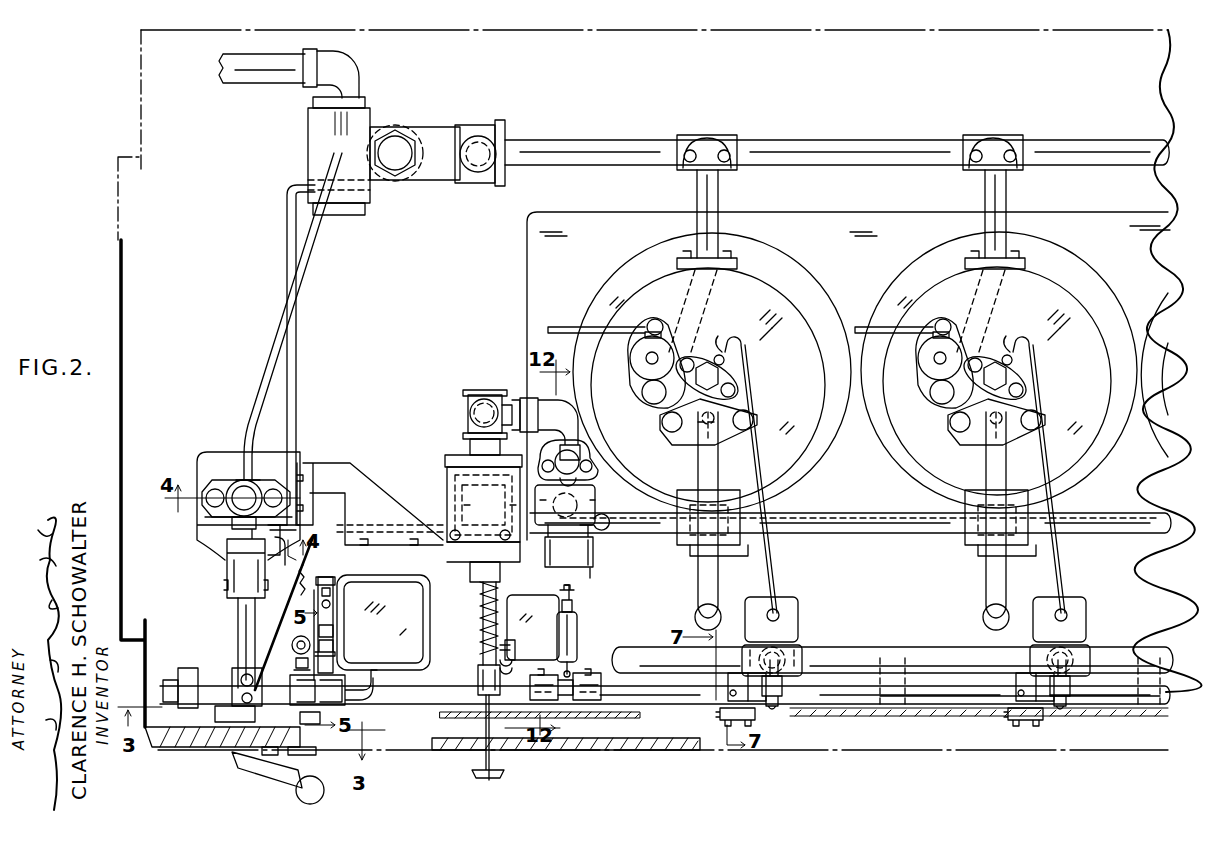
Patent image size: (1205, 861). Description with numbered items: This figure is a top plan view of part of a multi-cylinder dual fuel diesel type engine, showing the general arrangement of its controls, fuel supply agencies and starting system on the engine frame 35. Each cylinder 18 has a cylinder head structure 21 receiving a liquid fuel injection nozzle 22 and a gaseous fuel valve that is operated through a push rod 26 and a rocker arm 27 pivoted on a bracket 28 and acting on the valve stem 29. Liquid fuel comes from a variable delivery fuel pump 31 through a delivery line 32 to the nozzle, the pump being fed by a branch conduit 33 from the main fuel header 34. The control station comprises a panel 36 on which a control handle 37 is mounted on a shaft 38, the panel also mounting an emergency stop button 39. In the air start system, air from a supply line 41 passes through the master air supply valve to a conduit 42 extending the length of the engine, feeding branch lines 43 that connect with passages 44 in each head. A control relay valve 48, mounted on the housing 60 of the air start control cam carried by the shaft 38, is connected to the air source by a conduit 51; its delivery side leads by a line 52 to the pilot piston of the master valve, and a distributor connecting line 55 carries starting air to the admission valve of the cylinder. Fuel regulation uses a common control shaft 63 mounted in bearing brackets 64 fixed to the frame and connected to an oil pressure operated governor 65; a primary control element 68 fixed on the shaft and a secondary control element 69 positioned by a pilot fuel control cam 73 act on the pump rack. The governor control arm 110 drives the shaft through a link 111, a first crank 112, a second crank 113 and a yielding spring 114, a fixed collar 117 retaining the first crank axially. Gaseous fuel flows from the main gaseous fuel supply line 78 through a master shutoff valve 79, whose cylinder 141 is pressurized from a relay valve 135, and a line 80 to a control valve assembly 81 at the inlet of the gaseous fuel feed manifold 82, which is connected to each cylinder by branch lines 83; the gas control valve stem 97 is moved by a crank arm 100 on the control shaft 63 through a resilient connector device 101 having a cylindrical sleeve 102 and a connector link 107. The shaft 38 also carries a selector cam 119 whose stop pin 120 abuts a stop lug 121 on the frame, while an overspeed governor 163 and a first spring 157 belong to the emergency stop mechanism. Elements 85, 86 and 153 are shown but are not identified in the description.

The cylinder 18 is at (772, 266).
The cylinder head structure 21 is at (775, 318).
The liquid fuel injection nozzle 22 is at (706, 352).
The push rod 26 is at (698, 612).
The rocker arm 27 is at (698, 572).
The bracket 28 is at (742, 546).
The valve stem 29 is at (695, 428).
The fuel pump 31 is at (797, 607).
The delivery line 32 is at (770, 568).
The branch conduit 33 is at (788, 648).
The main fuel header 34 is at (897, 646).
The engine frame 35 is at (162, 750).
The panel 36 is at (408, 750).
The control handle 37 is at (272, 778).
The shaft 38 is at (237, 636).
The stop button 39 is at (488, 778).
The supply line 41 is at (268, 78).
The conduit 42 is at (598, 138).
The branch lines 43 is at (720, 192).
The passages 44 is at (702, 306).
The control relay valve 48 is at (372, 112).
The conduit 51 is at (278, 352).
The line 52 is at (298, 372).
The distributor connecting line 55 is at (562, 325).
The housing 60 is at (205, 458).
The control shaft 63 is at (420, 705).
The bearing brackets 64 is at (186, 667).
The governor 65 is at (386, 632).
The primary control element 68 is at (775, 708).
The secondary control element 69 is at (745, 717).
The pilot fuel control cam 73 is at (728, 694).
The main gaseous fuel supply line 78 is at (475, 410).
The master shutoff valve 79 is at (468, 416).
The line 80 is at (550, 398).
The control valve assembly 81 is at (596, 574).
The gaseous fuel feed manifold 82 is at (852, 512).
The branch lines 83 is at (677, 494).
The flange 85 is at (585, 468).
The valve body 86 is at (590, 495).
The valve stem 97 is at (574, 592).
The crank arm 100 is at (570, 700).
The resilient connector device 101 is at (577, 640).
The cylindrical sleeve 102 is at (576, 622).
The connector link 107 is at (572, 668).
The control arm 110 is at (335, 598).
The link 111 is at (334, 641).
The first crank 112 is at (336, 658).
The second crank 113 is at (296, 672).
The spring 114 is at (291, 649).
The fixed collar 117 is at (372, 700).
The selector cam 119 is at (215, 748).
The stop pin 120 is at (270, 750).
The stop lug 121 is at (312, 750).
The relay valve 135 is at (462, 585).
The cylinder 141 is at (460, 500).
The pivot block 153 is at (232, 690).
The first spring 157 is at (480, 640).
The overspeed governor 163 is at (529, 634).